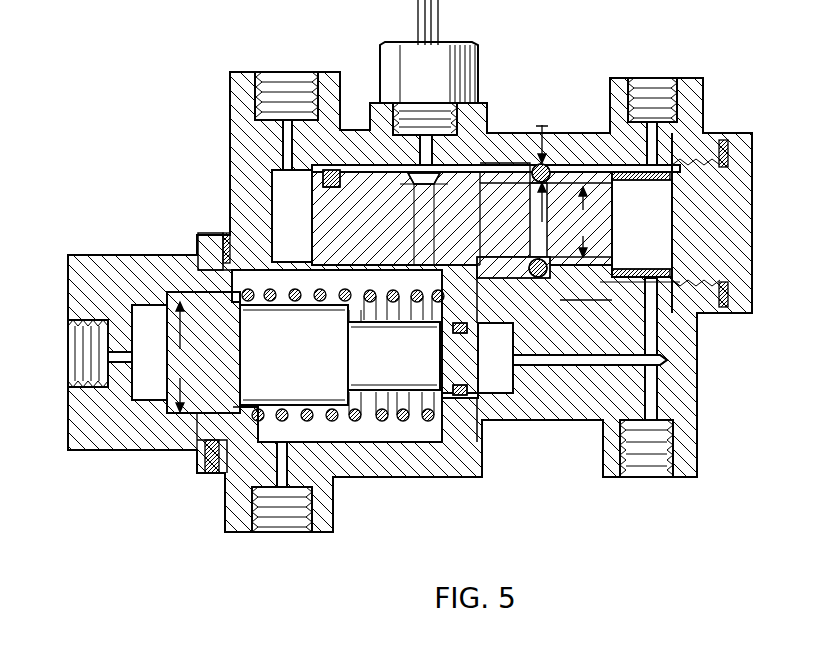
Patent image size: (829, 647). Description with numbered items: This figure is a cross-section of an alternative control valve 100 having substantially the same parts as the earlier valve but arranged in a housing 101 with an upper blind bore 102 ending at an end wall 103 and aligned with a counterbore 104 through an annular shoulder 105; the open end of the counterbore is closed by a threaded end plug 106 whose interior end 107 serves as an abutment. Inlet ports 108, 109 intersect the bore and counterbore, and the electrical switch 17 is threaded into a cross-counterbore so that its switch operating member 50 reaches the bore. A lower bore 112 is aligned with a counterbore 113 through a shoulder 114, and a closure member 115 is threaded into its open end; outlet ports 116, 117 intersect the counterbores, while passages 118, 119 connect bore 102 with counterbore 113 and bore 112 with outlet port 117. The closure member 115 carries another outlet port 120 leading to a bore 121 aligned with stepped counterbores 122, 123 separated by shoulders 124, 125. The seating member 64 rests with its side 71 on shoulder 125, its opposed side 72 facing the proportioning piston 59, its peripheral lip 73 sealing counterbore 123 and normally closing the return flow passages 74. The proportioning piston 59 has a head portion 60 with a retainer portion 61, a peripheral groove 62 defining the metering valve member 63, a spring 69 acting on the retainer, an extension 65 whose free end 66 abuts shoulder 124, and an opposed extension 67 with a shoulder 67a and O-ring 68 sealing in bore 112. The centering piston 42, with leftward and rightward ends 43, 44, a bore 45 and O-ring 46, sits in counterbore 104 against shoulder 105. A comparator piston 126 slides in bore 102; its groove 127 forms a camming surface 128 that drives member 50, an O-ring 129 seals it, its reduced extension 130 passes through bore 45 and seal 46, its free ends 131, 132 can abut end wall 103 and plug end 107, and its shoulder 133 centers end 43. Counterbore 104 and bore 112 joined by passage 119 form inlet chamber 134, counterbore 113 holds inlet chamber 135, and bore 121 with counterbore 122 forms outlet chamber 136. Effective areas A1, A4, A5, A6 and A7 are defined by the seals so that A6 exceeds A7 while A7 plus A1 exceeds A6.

The control valve 100 is at (708, 92).
The housing 101 is at (703, 108).
The upper blind bore 102 is at (300, 170).
The end wall 103 is at (277, 177).
The counterbore 104 is at (587, 278).
The annular shoulder 105 is at (445, 172).
The end plug 106 is at (745, 178).
The interior end 107 is at (665, 208).
The inlet port 108 is at (308, 73).
The inlet port 109 is at (662, 79).
The lower bore 112 is at (506, 388).
The counterbore 113 is at (367, 435).
The annular shoulder 114 is at (445, 440).
The closure member 115 is at (75, 437).
The outlet port 116 is at (298, 522).
The outlet port 117 is at (670, 477).
The passage 118 is at (292, 216).
The passage 119 is at (633, 366).
The outlet port 120 is at (70, 333).
The bore 121 is at (143, 300).
The counterbore 122 is at (170, 418).
The counterbore 123 is at (250, 427).
The annular shoulder 124 is at (180, 417).
The annular shoulder 125 is at (190, 420).
The comparator piston 126 is at (310, 222).
The peripheral groove 127 is at (419, 248).
The camming surface 128 is at (418, 195).
The O-ring 129 is at (396, 239).
The reduced extension 130 is at (618, 248).
The leftward free end 131 is at (320, 204).
The rightward free end 132 is at (622, 215).
The annular shoulder 133 is at (470, 250).
The inlet chamber 134 is at (658, 247).
The inlet chamber 135 is at (272, 202).
The outlet chamber 136 is at (147, 311).
The electrical switch 17 is at (468, 68).
The centering piston 42 is at (500, 163).
The leftward end 43 is at (470, 255).
The rightward end 44 is at (532, 280).
The bore 45 is at (540, 257).
The O-ring 46 is at (586, 324).
The switch operating member 50 is at (418, 155).
The proportioning piston 59 is at (410, 403).
The head portion 60 is at (275, 367).
The retainer portion 61 is at (240, 402).
The peripheral groove 62 is at (294, 319).
The valve member 63 is at (203, 352).
The seating member 64 is at (206, 452).
The extension 65 is at (167, 338).
The free end 66 is at (167, 372).
The extension 67 is at (473, 367).
The annular shoulder 67a is at (355, 310).
The O-ring 68 is at (462, 343).
The proportioning spring 69 is at (394, 356).
The side 71 is at (200, 270).
The side 72 is at (232, 296).
The peripheral lip 73 is at (235, 460).
The return flow passages 74 is at (222, 262).
The effective area A1 is at (553, 163).
The closing area A4 is at (483, 432).
The effective area A5 is at (183, 357).
The effective area A6 is at (333, 168).
The effective area A7 is at (582, 222).